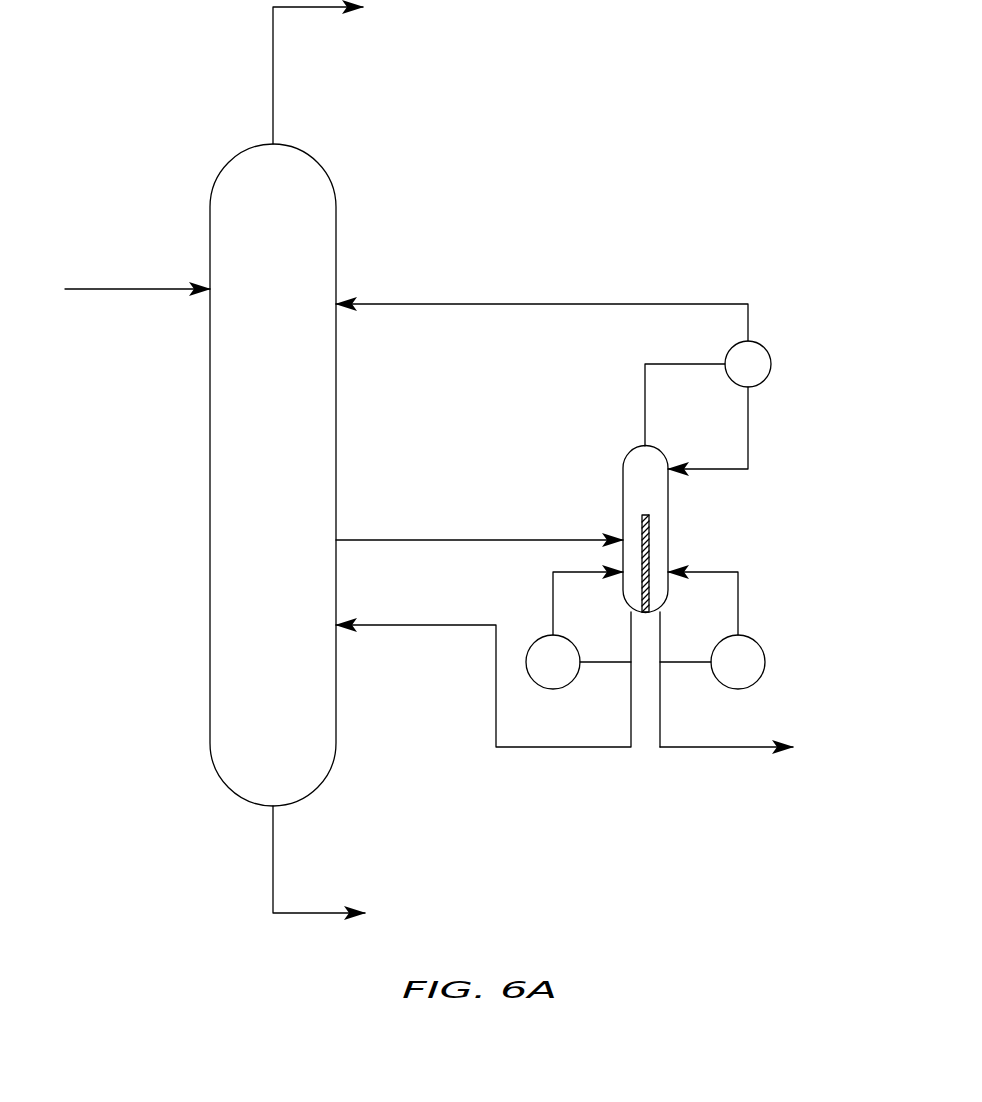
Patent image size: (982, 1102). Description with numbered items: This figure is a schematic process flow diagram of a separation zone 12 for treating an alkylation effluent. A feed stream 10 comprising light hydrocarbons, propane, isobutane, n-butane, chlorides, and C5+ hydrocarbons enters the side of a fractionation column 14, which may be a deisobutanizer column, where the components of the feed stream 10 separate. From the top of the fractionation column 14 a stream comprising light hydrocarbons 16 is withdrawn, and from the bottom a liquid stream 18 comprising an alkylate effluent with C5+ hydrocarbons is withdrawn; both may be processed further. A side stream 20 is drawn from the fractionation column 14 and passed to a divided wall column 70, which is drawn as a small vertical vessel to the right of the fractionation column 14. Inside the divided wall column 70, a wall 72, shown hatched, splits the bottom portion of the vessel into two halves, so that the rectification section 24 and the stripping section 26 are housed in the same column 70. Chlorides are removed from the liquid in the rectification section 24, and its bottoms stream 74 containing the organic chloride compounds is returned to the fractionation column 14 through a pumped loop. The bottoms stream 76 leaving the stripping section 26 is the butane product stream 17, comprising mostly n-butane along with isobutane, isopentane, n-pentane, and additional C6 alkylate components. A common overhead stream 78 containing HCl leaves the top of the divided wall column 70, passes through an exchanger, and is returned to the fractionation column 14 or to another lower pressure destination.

The feed stream 10 is at (140, 287).
The separation zone 12 is at (733, 136).
The fractionation column 14 is at (325, 168).
The stream comprising light hydrocarbons 16 is at (274, 63).
The butane product stream 17 is at (738, 747).
The liquid stream 18 is at (273, 858).
The side draw stream 20 is at (415, 540).
The rectification section 24 is at (593, 485).
The stripping section 26 is at (695, 502).
The divided wall column 70 is at (633, 447).
The wall 72 is at (647, 550).
The bottoms stream 74 is at (550, 747).
The bottoms stream 76 is at (658, 635).
The common overhead stream 78 is at (594, 304).